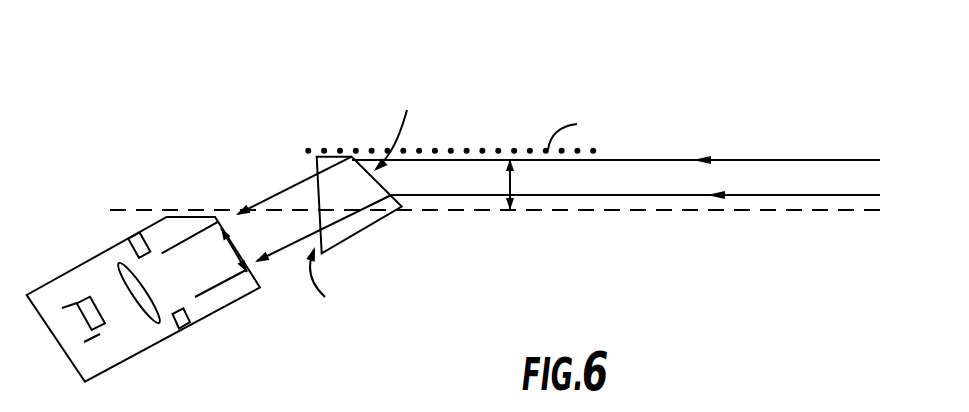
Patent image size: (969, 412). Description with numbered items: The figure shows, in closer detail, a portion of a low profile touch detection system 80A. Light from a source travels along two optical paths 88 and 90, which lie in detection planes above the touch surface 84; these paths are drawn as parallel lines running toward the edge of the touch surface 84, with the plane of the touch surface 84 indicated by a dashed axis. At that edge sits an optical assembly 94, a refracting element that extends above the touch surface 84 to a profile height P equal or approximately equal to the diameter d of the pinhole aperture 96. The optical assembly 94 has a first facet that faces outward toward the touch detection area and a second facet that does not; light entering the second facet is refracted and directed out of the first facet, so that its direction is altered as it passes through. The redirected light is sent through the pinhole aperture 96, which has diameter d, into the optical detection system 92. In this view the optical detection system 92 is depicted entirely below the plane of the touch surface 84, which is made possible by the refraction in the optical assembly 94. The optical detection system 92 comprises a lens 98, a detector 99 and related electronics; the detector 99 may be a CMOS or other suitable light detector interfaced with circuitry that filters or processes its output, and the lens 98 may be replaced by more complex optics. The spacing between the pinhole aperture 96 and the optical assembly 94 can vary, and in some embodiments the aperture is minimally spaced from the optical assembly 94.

The touch detection system 80A is at (748, 82).
The touch surface 84 is at (890, 143).
The optical path 88 is at (634, 160).
The optical path 90 is at (668, 196).
The optical detection system 92 is at (197, 217).
The optical assembly 94 is at (367, 232).
The pinhole aperture 96 is at (232, 272).
The lens 98 is at (119, 259).
The detector 99 is at (86, 297).